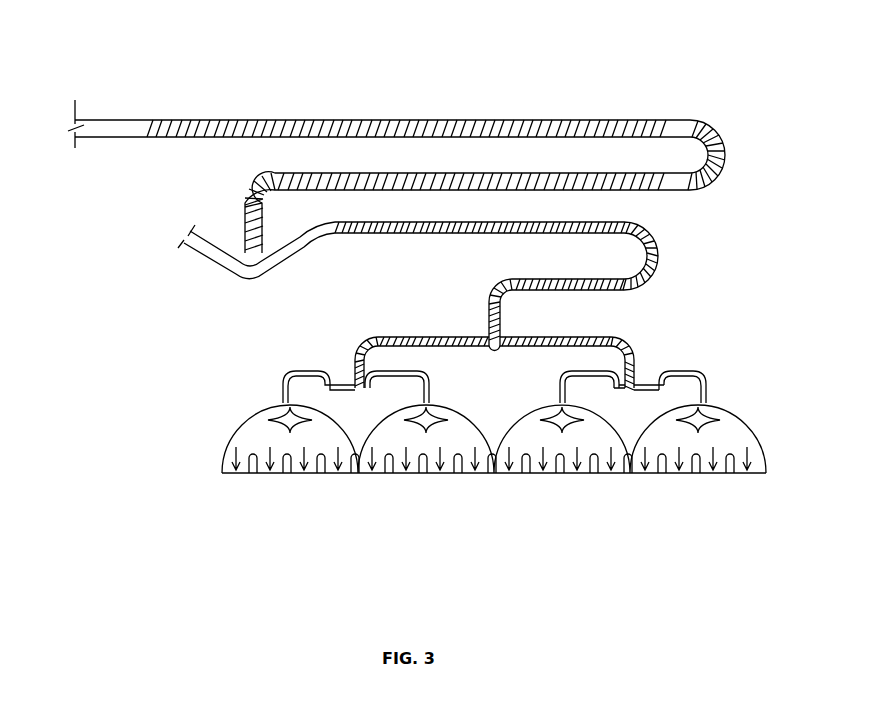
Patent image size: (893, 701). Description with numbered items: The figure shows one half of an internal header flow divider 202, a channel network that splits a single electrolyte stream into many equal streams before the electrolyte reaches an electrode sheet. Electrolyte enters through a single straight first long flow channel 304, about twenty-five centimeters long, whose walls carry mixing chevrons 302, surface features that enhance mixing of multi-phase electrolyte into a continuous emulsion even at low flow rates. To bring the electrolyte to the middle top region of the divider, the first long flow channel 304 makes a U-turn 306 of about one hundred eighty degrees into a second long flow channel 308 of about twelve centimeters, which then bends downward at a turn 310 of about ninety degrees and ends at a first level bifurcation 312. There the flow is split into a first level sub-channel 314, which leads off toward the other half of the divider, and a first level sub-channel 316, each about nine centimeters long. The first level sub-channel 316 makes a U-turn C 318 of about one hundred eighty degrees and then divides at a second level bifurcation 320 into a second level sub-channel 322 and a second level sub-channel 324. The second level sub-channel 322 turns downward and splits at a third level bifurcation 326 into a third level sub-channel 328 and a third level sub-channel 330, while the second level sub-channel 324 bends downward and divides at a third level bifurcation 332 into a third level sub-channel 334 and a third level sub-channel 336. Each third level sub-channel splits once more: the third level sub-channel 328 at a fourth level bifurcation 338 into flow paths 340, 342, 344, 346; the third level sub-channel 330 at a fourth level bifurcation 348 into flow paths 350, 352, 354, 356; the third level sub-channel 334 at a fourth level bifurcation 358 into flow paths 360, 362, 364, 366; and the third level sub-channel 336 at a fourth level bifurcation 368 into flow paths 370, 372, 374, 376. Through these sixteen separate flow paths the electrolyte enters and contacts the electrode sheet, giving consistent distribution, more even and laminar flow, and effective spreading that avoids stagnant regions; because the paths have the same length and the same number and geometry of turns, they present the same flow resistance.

The internal header flow divider 202 is at (171, 64).
The mixing chevrons 302 is at (400, 120).
The first long flow channel 304 is at (238, 120).
The U-turn 306 is at (705, 125).
The second long flow channel 308 is at (640, 190).
The turn 310 is at (252, 200).
The first level bifurcation 312 is at (250, 278).
The first level sub-channel 314 is at (205, 272).
The first level sub-channel 316 is at (300, 262).
The U-turn C 318 is at (656, 250).
The second level bifurcation 320 is at (488, 340).
The second level sub-channel 322 is at (535, 342).
The second level sub-channel 324 is at (402, 338).
The third level bifurcation 326 is at (633, 385).
The third level sub-channel 328 is at (700, 373).
The third level sub-channel 330 is at (558, 386).
The third level bifurcation 332 is at (356, 385).
The third level sub-channel 334 is at (432, 393).
The third level sub-channel 336 is at (292, 376).
The fourth level bifurcation 338 is at (728, 415).
The flow path 340 is at (752, 455).
The flow path 342 is at (722, 475).
The flow path 344 is at (697, 475).
The flow path 346 is at (652, 475).
The fourth level bifurcation 348 is at (622, 392).
The flow path 350 is at (597, 475).
The flow path 352 is at (572, 475).
The flow path 354 is at (553, 475).
The flow path 356 is at (512, 475).
The fourth level bifurcation 358 is at (452, 410).
The flow path 360 is at (443, 475).
The flow path 362 is at (468, 475).
The flow path 364 is at (400, 475).
The flow path 366 is at (385, 475).
The fourth level bifurcation 368 is at (283, 415).
The flow path 370 is at (328, 475).
The flow path 372 is at (318, 475).
The flow path 374 is at (292, 475).
The flow path 376 is at (238, 475).